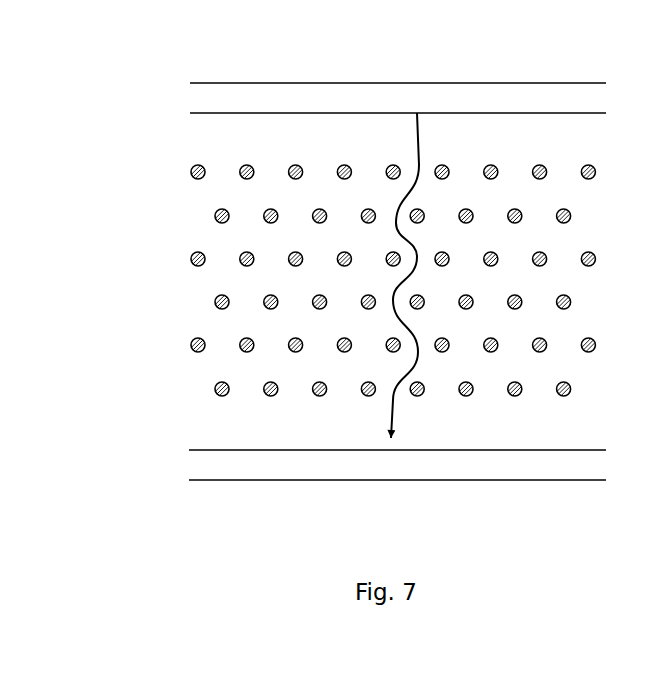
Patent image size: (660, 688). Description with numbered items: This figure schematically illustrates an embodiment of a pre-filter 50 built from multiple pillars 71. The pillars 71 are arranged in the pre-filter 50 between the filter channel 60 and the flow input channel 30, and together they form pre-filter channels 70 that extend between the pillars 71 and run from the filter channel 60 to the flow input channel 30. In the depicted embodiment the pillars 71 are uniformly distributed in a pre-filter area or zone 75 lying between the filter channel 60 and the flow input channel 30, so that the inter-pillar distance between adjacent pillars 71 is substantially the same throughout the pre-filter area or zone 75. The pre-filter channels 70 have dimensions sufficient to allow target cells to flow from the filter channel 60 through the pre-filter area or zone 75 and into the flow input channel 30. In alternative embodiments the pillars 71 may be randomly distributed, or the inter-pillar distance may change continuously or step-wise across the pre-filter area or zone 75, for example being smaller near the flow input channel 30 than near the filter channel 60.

The pre-filter 50 is at (157, 82).
The filter channel 60 is at (383, 82).
The flow input channel 30 is at (347, 481).
The pre-filter channel 70 is at (416, 141).
The pillar 71 is at (241, 165).
The pre-filter area or zone 75 is at (210, 233).